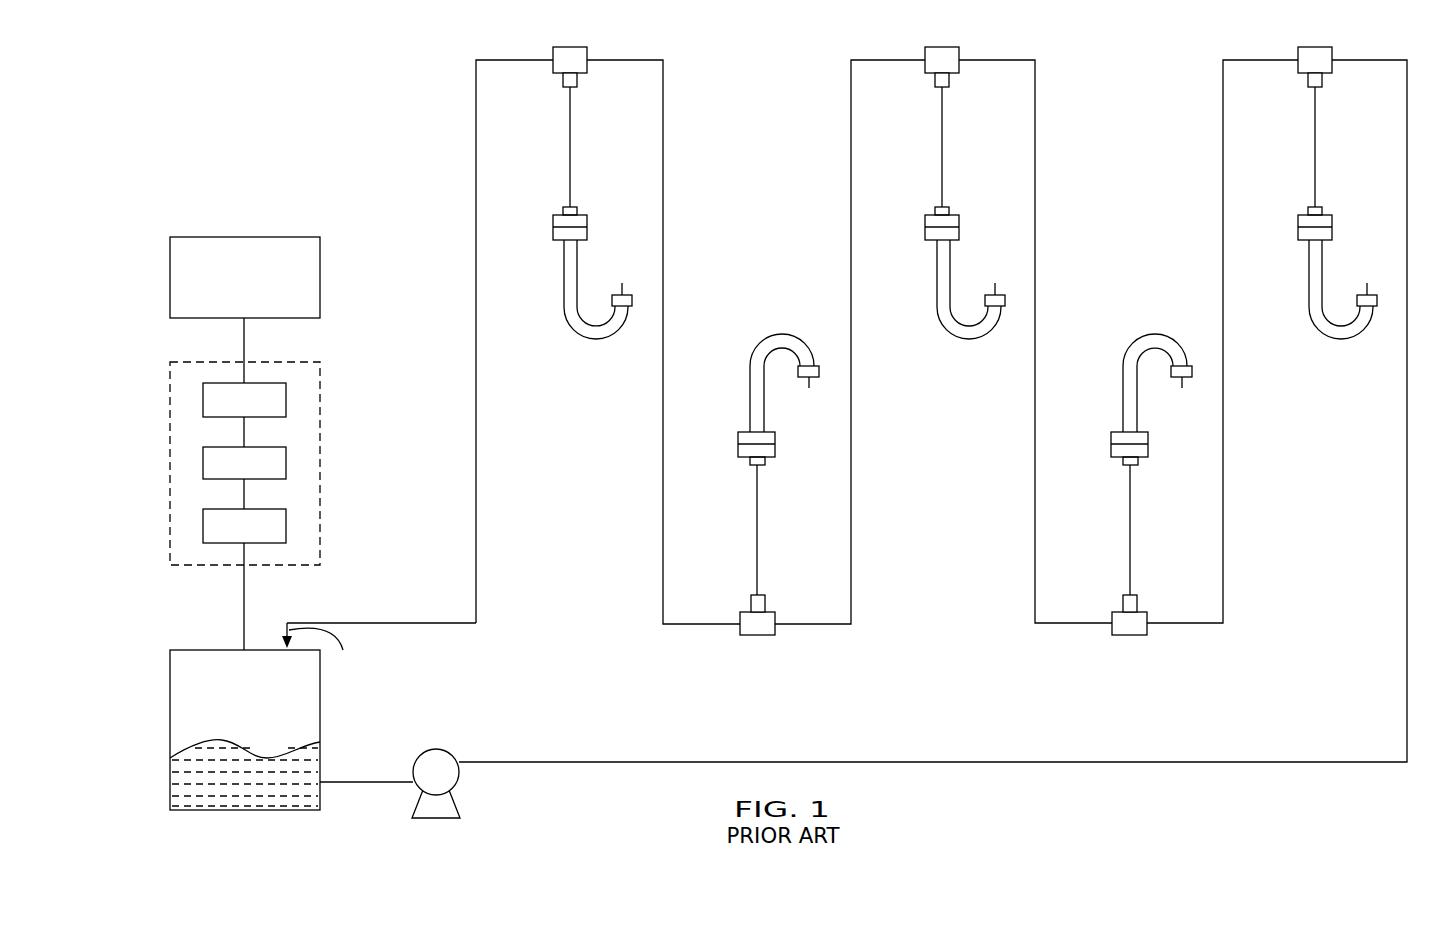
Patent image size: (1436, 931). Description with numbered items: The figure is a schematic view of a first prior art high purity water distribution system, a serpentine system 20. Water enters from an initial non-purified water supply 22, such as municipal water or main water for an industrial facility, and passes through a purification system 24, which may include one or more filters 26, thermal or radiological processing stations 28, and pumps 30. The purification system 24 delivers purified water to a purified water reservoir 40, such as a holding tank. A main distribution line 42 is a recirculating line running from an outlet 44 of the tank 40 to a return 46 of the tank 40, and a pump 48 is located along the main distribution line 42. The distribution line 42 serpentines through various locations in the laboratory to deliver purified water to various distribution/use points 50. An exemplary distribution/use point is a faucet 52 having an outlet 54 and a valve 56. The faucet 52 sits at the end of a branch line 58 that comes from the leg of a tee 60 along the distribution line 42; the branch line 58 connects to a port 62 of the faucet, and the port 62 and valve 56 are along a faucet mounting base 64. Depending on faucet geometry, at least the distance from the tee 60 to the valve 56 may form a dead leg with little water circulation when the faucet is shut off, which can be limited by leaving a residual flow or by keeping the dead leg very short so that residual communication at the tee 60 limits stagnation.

The serpentine system 20 is at (186, 172).
The non-purified water supply 22 is at (233, 289).
The purification system 24 is at (250, 566).
The filters 26 is at (233, 411).
The processing stations 28 is at (233, 474).
The pumps 30 is at (233, 536).
The purified water reservoir 40 is at (233, 711).
The main distribution line 42 is at (1068, 762).
The outlet 44 is at (320, 782).
The return 46 is at (379, 650).
The pump 48 is at (425, 783).
The distribution/use points 50 is at (616, 376).
The faucet 52 is at (1120, 320).
The outlet 54 is at (1191, 408).
The valve 56 is at (1112, 436).
The branch line 58 is at (1131, 565).
The tee 60 is at (1149, 653).
The port 62 is at (1137, 468).
The faucet mounting base 64 is at (1118, 449).